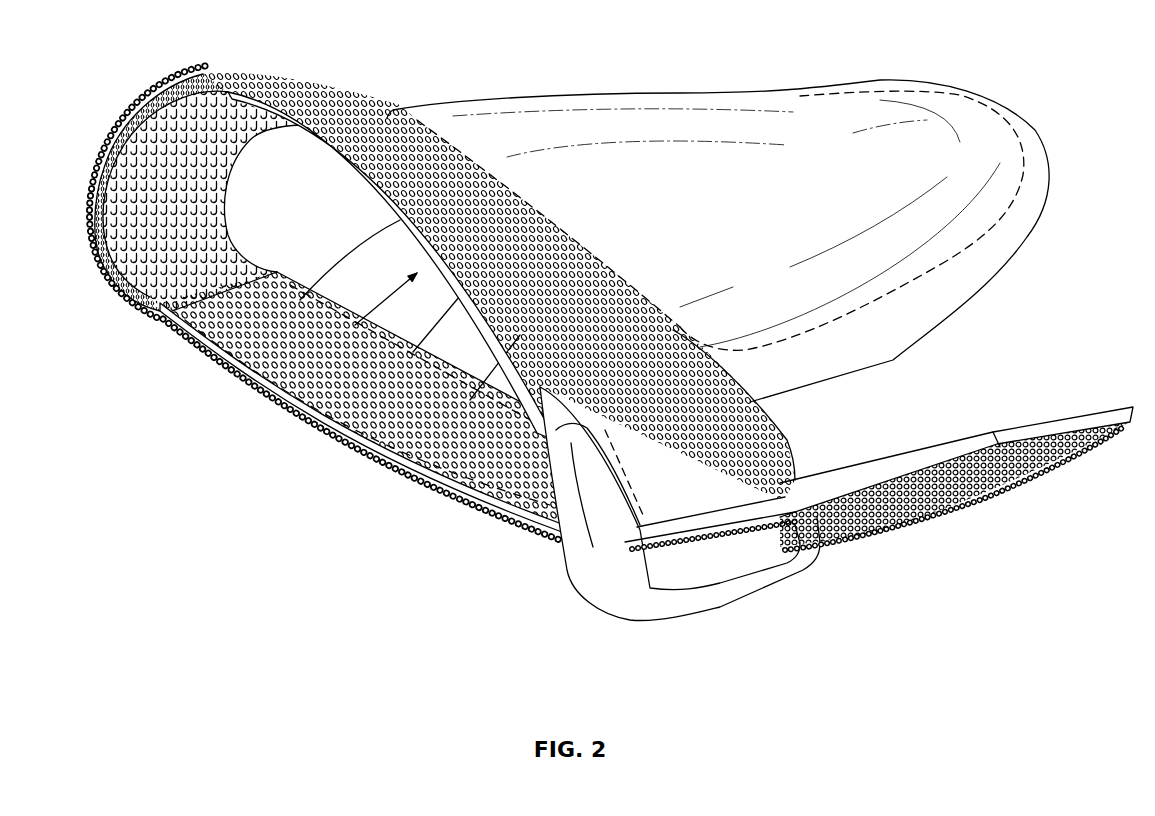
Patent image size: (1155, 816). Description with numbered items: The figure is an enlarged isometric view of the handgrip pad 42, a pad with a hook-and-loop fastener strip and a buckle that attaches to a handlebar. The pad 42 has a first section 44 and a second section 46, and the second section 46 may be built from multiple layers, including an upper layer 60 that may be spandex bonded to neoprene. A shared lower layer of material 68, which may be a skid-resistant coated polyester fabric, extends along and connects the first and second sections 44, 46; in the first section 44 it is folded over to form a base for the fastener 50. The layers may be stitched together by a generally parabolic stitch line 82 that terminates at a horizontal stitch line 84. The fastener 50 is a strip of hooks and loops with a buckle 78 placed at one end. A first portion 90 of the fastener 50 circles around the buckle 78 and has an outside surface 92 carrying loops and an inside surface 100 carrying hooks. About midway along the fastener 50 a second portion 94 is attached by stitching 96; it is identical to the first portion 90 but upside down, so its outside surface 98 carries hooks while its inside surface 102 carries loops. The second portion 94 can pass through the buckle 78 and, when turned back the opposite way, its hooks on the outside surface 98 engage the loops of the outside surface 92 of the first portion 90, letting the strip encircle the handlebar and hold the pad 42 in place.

The handgrip pad 42 is at (577, 77).
The first section 44 is at (310, 390).
The second section 46 is at (878, 74).
The fastener 50 is at (1062, 413).
The upper layer 60 is at (720, 137).
The lower layer of material 68 is at (244, 390).
The buckle 78 is at (615, 585).
The parabolic stitch line 82 is at (945, 263).
The horizontal stitch line 84 is at (628, 228).
The first portion 90 is at (420, 470).
The outside surface 92 is at (373, 450).
The second portion 94 is at (515, 525).
The stitching 96 is at (203, 350).
The outside surface 98 is at (840, 530).
The inside surface 100 is at (207, 85).
The inside surface 102 is at (790, 493).